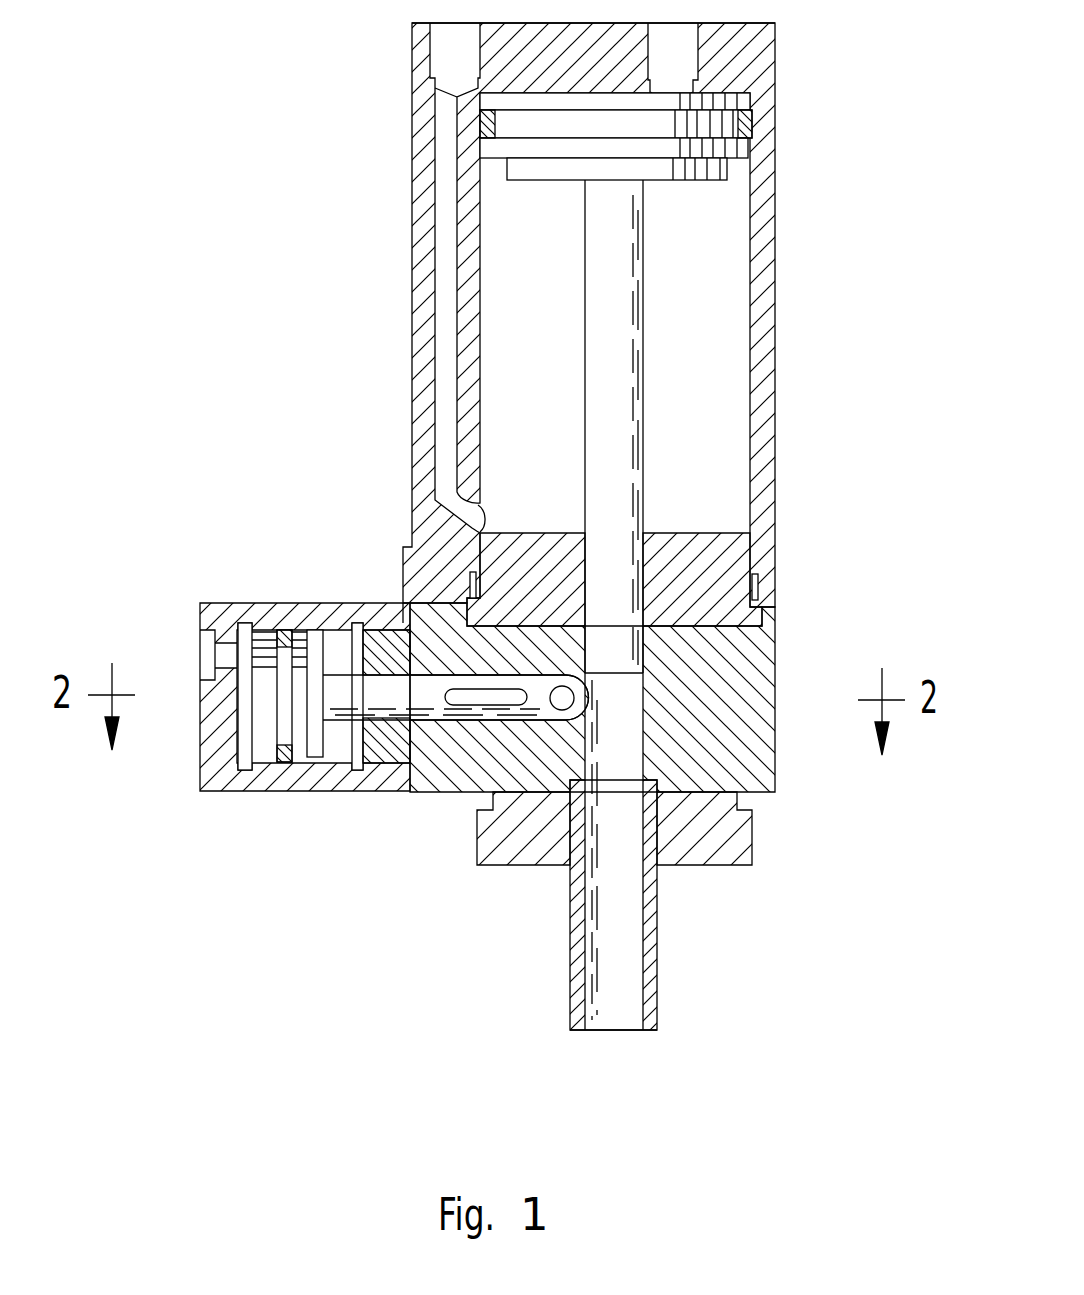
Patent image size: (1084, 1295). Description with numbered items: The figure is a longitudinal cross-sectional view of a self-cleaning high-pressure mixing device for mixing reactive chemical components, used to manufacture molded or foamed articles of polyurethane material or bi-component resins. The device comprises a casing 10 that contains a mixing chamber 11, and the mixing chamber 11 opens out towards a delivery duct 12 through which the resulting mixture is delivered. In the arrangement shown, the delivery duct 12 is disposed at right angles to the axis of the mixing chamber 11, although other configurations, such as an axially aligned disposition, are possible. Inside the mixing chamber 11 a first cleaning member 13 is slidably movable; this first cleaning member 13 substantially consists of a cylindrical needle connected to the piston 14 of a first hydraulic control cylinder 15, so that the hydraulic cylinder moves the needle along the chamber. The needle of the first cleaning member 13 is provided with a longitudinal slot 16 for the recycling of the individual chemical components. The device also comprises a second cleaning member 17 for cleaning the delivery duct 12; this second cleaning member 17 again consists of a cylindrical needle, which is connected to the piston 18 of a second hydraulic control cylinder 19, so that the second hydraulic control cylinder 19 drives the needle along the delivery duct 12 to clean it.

The casing 10 is at (748, 663).
The mixing chamber 11 is at (578, 712).
The delivery duct 12 is at (623, 957).
The first cleaning member 13 is at (385, 690).
The piston 14 is at (262, 735).
The first hydraulic control cylinder 15 is at (309, 615).
The longitudinal slot 16 is at (468, 697).
The second cleaning member 17 is at (623, 370).
The piston 18 is at (515, 147).
The second hydraulic control cylinder 19 is at (422, 319).